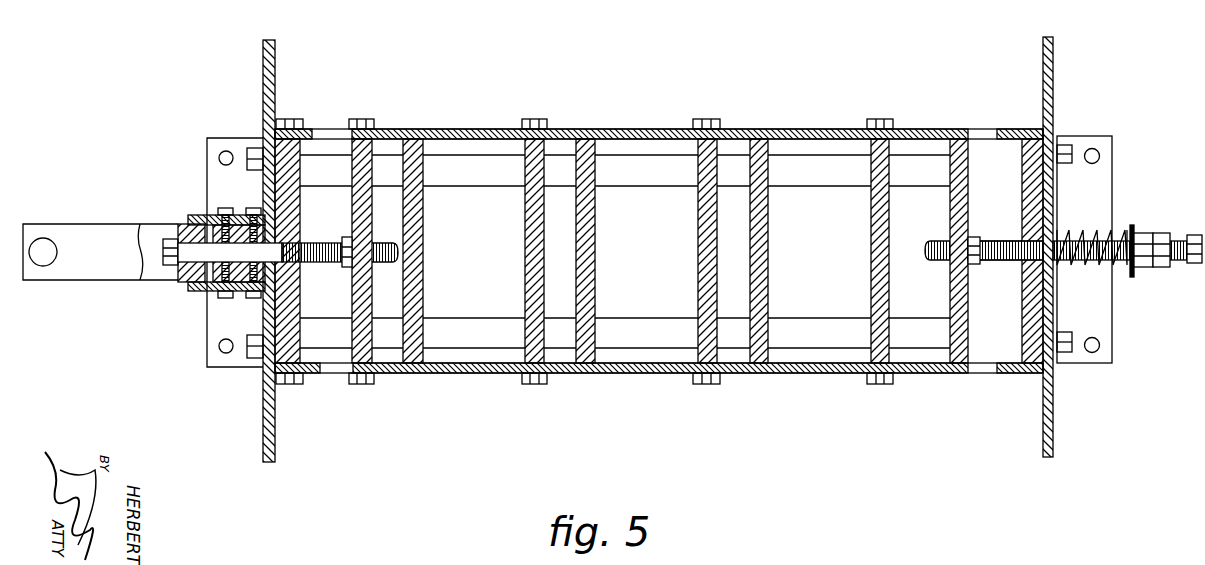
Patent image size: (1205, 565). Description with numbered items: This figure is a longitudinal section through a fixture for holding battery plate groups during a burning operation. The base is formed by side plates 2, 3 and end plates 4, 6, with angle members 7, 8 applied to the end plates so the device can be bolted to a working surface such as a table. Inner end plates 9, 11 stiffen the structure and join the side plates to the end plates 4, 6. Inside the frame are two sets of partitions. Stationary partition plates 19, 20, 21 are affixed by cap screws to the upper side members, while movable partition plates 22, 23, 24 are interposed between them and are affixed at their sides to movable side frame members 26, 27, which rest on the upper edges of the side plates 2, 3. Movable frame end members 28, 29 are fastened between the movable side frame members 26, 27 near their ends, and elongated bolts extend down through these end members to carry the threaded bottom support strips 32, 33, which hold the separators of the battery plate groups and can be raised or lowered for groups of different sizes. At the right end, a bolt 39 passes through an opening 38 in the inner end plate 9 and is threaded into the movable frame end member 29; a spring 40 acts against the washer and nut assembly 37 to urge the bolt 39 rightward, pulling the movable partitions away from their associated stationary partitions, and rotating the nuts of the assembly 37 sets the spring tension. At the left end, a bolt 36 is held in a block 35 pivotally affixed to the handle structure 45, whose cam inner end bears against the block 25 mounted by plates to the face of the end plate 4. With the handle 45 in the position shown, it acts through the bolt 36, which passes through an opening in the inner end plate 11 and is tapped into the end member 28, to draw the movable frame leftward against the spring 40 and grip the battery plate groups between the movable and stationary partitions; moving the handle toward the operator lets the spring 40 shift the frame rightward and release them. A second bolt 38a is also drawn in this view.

The side plate 2 is at (308, 372).
The side plate 3 is at (305, 130).
The end plate 4 is at (262, 78).
The end plate 6 is at (1048, 418).
The angle member 7 is at (1100, 203).
The angle member 8 is at (236, 358).
The inner end plate 9 is at (1035, 298).
The inner end plate 11 is at (300, 302).
The stationary partition plate 19 is at (415, 297).
The stationary partition plate 20 is at (595, 282).
The stationary partition plate 21 is at (760, 290).
The movable partition plate 22 is at (535, 287).
The movable partition plate 23 is at (705, 305).
The movable partition plate 24 is at (880, 310).
The block 25 is at (238, 294).
The movable side frame member 26 is at (473, 373).
The movable side frame member 27 is at (432, 128).
The movable frame end member 28 is at (362, 322).
The movable frame end member 29 is at (960, 295).
The bottom support strip 32 is at (450, 330).
The bottom support strip 33 is at (462, 170).
The block 35 is at (183, 224).
The bolt 36 is at (190, 268).
The washer and nut assembly 37 is at (1143, 264).
The opening 38 is at (1022, 240).
The threaded bolt 38a is at (285, 247).
The bolt 39 is at (978, 255).
The spring 40 is at (1075, 258).
The handle structure 45 is at (117, 222).